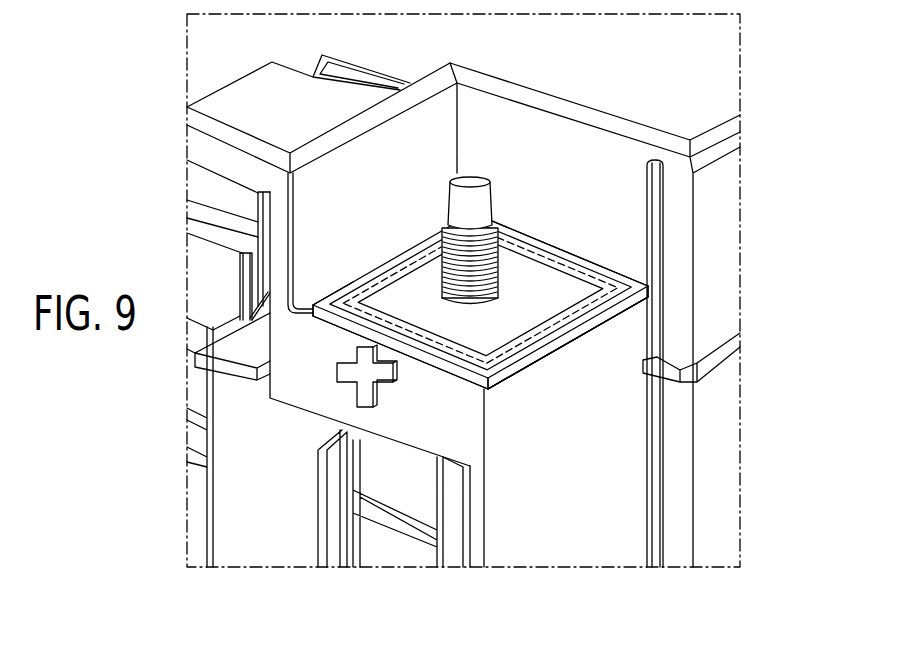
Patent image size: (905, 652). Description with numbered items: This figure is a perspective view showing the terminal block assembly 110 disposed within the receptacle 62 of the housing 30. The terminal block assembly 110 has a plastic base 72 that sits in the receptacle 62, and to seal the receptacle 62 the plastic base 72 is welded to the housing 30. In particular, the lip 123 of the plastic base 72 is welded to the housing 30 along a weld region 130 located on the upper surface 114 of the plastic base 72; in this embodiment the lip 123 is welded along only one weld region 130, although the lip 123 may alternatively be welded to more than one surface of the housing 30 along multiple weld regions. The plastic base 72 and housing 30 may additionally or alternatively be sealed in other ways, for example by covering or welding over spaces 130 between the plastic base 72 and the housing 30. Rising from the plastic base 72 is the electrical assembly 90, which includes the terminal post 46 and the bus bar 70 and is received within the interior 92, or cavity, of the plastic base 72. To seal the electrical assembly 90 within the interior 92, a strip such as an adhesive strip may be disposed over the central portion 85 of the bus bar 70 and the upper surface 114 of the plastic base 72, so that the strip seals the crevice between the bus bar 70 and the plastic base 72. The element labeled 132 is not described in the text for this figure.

The housing 30 is at (617, 465).
The terminal post 46 is at (477, 157).
The receptacle 62 is at (580, 325).
The bus bar 70 is at (553, 288).
The plastic base 72 is at (610, 268).
The central portion 85 is at (605, 273).
The electrical assembly 90 is at (413, 266).
The interior 92 is at (507, 335).
The terminal block assembly 110 is at (587, 207).
The upper surface 114 is at (593, 290).
The lip 123 is at (330, 316).
The weld region 130 is at (515, 255).
The plate bottom edge 132 is at (540, 338).